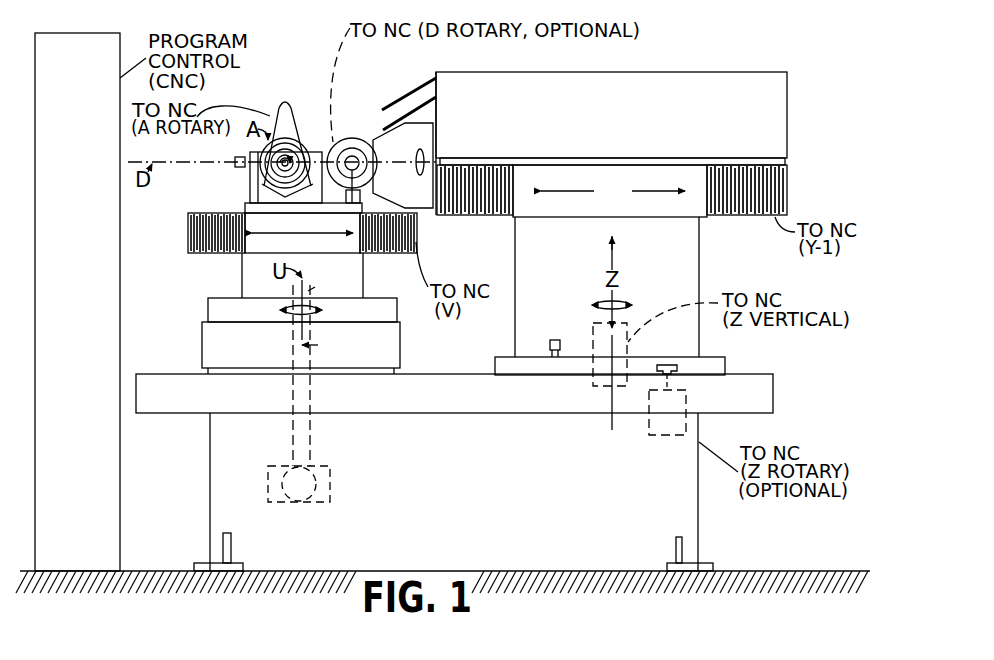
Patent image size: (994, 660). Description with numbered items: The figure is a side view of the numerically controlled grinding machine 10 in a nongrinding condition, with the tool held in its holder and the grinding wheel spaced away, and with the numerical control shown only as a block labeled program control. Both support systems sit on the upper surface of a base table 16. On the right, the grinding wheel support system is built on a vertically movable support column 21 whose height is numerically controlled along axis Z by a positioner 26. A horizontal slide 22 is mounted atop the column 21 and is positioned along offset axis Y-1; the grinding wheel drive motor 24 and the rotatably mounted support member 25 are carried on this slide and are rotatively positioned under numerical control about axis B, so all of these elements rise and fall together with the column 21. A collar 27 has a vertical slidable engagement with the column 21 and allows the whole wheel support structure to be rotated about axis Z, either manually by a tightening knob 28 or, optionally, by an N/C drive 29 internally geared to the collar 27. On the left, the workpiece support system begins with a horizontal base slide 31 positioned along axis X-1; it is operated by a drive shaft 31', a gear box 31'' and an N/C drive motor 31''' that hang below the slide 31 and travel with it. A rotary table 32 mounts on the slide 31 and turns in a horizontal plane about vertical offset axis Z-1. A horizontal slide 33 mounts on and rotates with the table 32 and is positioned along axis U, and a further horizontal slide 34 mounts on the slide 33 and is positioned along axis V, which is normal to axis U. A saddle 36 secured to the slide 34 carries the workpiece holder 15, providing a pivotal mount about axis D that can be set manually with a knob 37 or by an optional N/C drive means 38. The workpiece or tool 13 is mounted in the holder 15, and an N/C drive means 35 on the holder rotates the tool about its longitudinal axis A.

The grinding machine 10 is at (308, 60).
The workpiece or tool 13 is at (280, 163).
The workpiece holder 15 is at (272, 171).
The base table 16 is at (208, 477).
The support column 21 is at (690, 283).
The horizontal slide 22 is at (612, 211).
The grinding wheel drive motor 24 is at (370, 122).
The rotatably mounted support member 25 is at (437, 141).
The positioner 26 is at (633, 342).
The collar 27 is at (727, 357).
The manual tightening knob 28 is at (553, 340).
The N/C drive 29 is at (650, 428).
The horizontal base slide 31 is at (279, 348).
The drive shaft 31' is at (329, 375).
The gear box 31'' is at (331, 393).
The N/C drive motor 31''' is at (319, 500).
The rotary table 32 is at (212, 311).
The horizontal slide 33 is at (353, 278).
The horizontal slide 34 is at (302, 255).
The N/C drive means 35 is at (283, 103).
The saddle 36 is at (248, 205).
The manual knob 37 is at (234, 160).
The numerically controlled drive means 38 is at (350, 188).
The axis V is at (255, 248).
The axis X1 X-1 is at (328, 346).
The axis Y1 Y-1 is at (613, 191).
The axis Z1 Z-1 is at (315, 309).